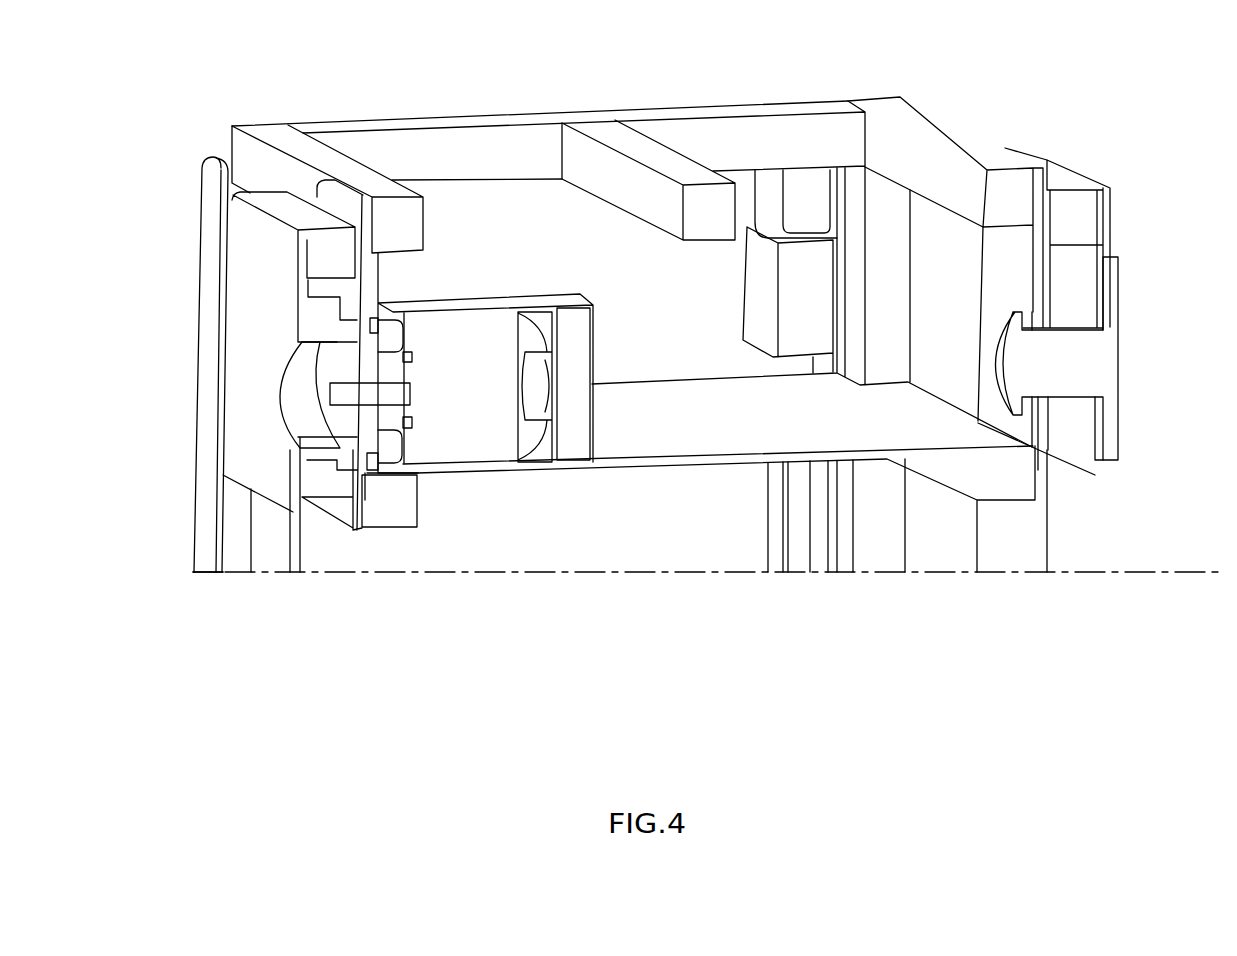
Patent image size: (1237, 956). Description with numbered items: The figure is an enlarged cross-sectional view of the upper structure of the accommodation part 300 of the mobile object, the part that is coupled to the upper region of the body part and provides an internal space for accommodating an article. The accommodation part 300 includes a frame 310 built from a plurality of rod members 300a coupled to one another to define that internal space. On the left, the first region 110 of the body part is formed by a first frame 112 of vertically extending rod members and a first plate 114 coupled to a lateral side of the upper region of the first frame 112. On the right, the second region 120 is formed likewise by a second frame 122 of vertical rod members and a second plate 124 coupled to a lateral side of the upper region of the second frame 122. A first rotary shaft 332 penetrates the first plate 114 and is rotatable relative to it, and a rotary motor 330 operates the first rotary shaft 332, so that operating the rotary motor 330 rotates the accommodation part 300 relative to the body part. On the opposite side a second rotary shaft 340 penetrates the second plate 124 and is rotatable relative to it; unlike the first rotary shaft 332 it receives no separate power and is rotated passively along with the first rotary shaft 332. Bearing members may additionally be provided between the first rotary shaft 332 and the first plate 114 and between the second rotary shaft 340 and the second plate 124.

The accommodation part 300 is at (271, 56).
The frame 310 is at (619, 90).
The rod members 300a is at (940, 130).
The rotary motor 330 is at (477, 355).
The first rotary shaft 332 is at (367, 395).
The second rotary shaft 340 is at (1065, 367).
The first region 110 is at (330, 636).
The first frame 112 is at (265, 545).
The first plate 114 is at (340, 503).
The second region 120 is at (1055, 655).
The second frame 122 is at (1022, 517).
The second plate 124 is at (993, 405).